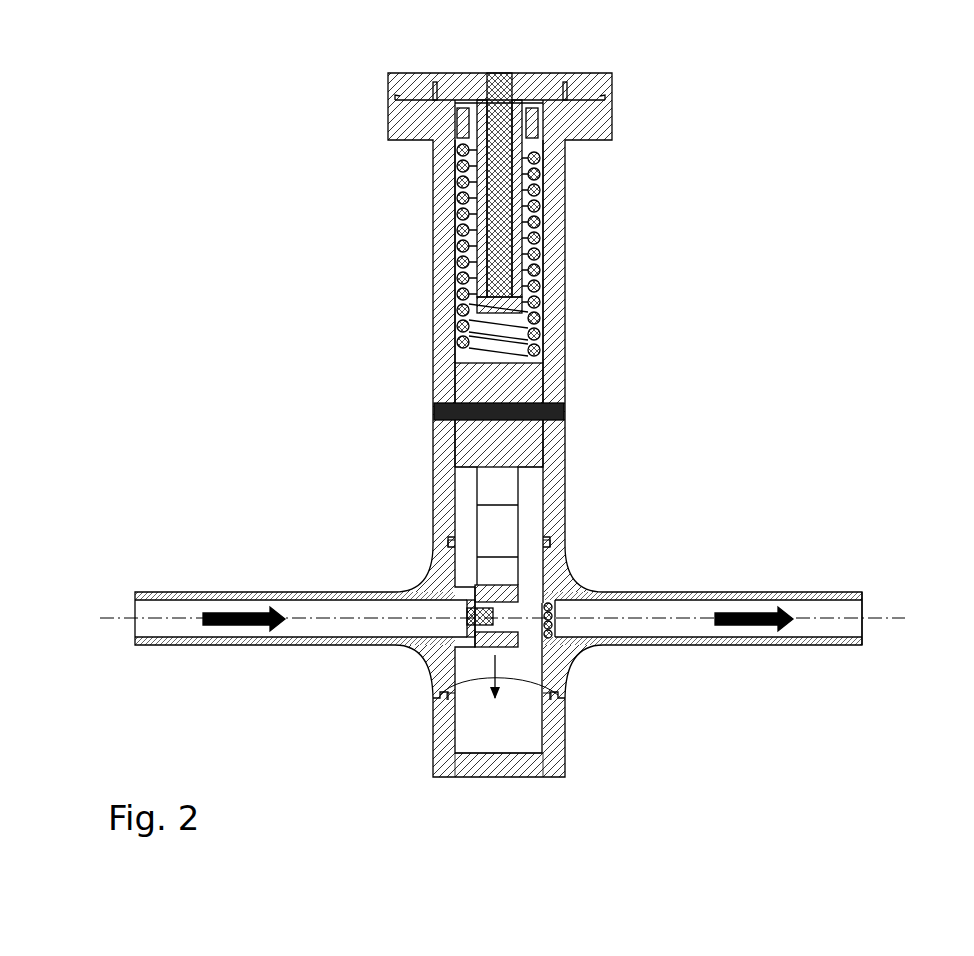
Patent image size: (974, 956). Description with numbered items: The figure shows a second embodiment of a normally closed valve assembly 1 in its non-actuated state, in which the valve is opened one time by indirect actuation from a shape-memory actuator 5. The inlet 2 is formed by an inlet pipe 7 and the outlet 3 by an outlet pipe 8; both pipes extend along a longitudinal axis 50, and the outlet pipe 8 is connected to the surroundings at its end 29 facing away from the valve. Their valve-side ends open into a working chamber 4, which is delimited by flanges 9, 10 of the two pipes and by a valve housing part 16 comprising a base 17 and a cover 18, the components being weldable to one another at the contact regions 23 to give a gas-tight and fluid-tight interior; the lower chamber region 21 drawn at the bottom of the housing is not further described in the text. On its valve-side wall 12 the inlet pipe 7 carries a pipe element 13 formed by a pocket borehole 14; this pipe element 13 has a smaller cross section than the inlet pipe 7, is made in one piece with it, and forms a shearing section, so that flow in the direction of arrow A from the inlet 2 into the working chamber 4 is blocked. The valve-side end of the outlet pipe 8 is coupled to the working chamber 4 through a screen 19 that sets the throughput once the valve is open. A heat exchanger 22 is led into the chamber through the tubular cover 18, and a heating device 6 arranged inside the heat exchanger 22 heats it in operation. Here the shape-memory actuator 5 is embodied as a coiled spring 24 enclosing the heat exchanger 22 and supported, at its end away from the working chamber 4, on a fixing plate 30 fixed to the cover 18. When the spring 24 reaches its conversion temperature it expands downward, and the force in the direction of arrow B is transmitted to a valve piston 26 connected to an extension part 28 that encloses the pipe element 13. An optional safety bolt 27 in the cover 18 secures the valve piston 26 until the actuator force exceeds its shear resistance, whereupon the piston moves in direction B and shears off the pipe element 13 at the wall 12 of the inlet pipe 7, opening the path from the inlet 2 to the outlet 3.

The valve assembly 1 is at (734, 107).
The inlet 2 is at (410, 614).
The outlet 3 is at (600, 612).
The working chamber 4 is at (530, 598).
The shape-memory actuator 5 is at (537, 327).
The spring 24 is at (564, 315).
The heating device 6 is at (493, 73).
The inlet pipe 7 is at (192, 603).
The outlet pipe 8 is at (817, 610).
The flange 9 is at (430, 698).
The flange 10 is at (562, 690).
The valve-side wall 12 is at (426, 537).
The pipe element 13 is at (478, 628).
The pocket borehole 14 is at (470, 617).
The valve housing part 16 is at (498, 768).
The base 17 is at (535, 773).
The cover 18 is at (550, 203).
The screen 19 is at (556, 634).
The lower chamber wall 21 is at (450, 775).
The heat exchanger 22 is at (530, 300).
The contact regions 23 is at (433, 538).
The valve piston 26 is at (470, 378).
The safety bolt 27 is at (460, 410).
The extension part 28 is at (524, 518).
The end 29 is at (852, 610).
The fixing plate 30 is at (545, 128).
The longitudinal axis 50 is at (880, 622).
The arrow A is at (220, 627).
The arrow B is at (497, 667).